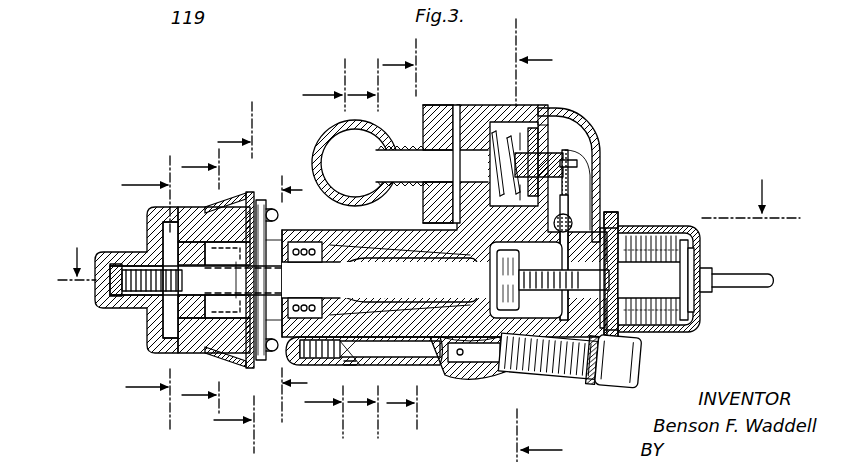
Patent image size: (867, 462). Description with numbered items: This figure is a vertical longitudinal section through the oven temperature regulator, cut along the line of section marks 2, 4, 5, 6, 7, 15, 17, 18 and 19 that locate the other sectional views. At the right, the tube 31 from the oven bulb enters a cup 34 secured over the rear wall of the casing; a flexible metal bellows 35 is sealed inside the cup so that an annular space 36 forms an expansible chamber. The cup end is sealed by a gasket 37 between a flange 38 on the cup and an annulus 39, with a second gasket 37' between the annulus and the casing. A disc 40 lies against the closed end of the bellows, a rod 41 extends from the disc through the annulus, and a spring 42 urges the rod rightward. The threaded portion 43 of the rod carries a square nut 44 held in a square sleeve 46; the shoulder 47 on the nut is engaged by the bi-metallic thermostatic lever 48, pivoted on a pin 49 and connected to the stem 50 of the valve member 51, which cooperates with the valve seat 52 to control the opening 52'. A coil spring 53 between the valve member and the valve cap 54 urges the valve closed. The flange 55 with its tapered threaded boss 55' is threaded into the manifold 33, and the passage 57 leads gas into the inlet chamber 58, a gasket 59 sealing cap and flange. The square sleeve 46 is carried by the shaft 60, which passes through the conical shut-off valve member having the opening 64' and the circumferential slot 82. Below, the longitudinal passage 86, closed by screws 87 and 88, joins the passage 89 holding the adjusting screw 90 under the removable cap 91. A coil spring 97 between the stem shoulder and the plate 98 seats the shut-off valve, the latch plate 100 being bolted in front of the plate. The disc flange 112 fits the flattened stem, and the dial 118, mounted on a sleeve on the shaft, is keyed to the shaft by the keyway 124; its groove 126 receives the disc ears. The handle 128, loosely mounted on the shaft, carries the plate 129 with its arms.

The section line 2- 2 is at (429, 227).
The section line 4- 4 is at (539, 240).
The section line 5- 5 is at (400, 235).
The section line 6- 6 is at (363, 248).
The section line 7- 7 is at (324, 248).
The section line 15- 15 is at (200, 281).
The section line 17- 17 is at (297, 299).
The section line 18- 18 is at (234, 277).
The section line 19- 19 is at (146, 294).
The tube 31 is at (769, 291).
The manifold 33 is at (325, 133).
The cup 34 is at (690, 328).
The flexible metal bellows 35 is at (694, 240).
The annular space 36 is at (700, 316).
The gasket 37 is at (643, 267).
The second gasket 37' is at (622, 258).
The flange 38 is at (619, 341).
The annulus 39 is at (613, 212).
The disc 40 is at (686, 283).
The rod 41 is at (690, 248).
The spring 42 is at (686, 239).
The threaded portion 43 is at (574, 292).
The square nut 44 is at (516, 355).
The square sleeve 46 is at (470, 352).
The shoulder 47 is at (548, 373).
The bi-metallic compensating thermostatic lever 48 is at (592, 132).
The pin 49 is at (571, 220).
The stem 50 is at (562, 150).
The valve member 51 is at (525, 150).
The valve seat 52 is at (569, 86).
The opening 52' is at (526, 272).
The coil spring 53 is at (500, 128).
The valve cap 54 is at (459, 108).
The flange 55 is at (438, 87).
The boss 55' is at (415, 160).
The passage 57 is at (428, 142).
The chamber 58 is at (520, 128).
The gasket 59 is at (428, 214).
The shaft 60 is at (432, 302).
The opening 64' is at (454, 360).
The slot 82 is at (356, 241).
The longitudinal passage 86 is at (396, 349).
The screw 87 is at (339, 360).
The screw 88 is at (281, 350).
The passage 89 is at (471, 334).
The adjusting screw 90 is at (592, 378).
The cap 91 is at (641, 353).
The coil spring 97 is at (305, 243).
The plate 98 is at (279, 232).
The latch plate 100 is at (252, 352).
The flange 112 is at (250, 196).
The dial 118 is at (206, 355).
The keyway 124 is at (102, 294).
The groove 126 is at (200, 205).
The handle 128 is at (136, 302).
The plate 129 is at (150, 230).